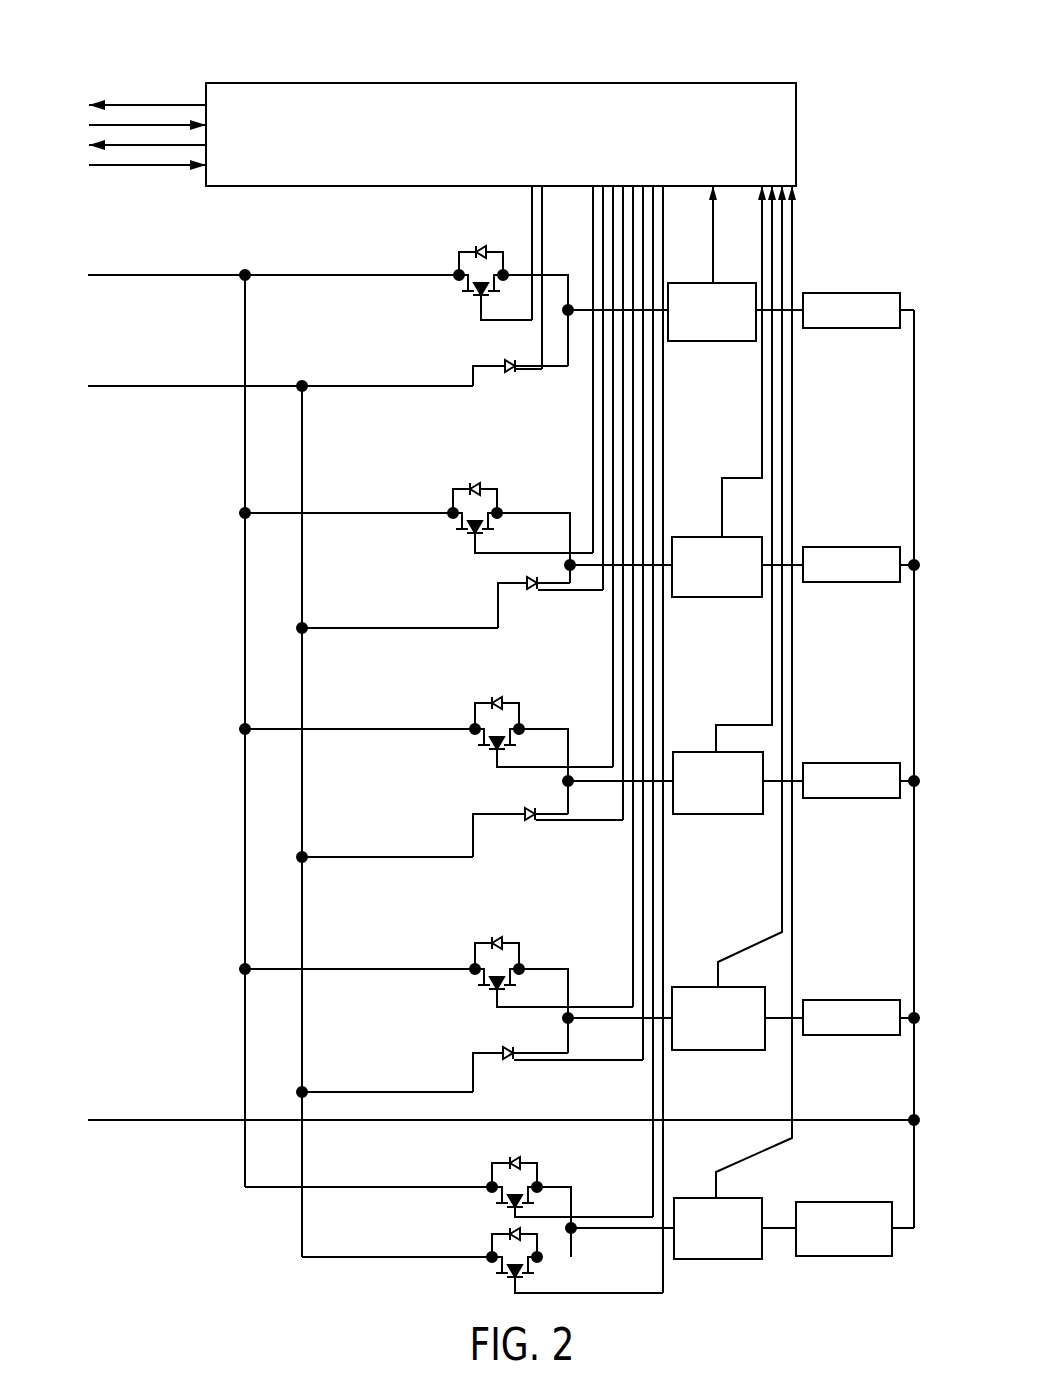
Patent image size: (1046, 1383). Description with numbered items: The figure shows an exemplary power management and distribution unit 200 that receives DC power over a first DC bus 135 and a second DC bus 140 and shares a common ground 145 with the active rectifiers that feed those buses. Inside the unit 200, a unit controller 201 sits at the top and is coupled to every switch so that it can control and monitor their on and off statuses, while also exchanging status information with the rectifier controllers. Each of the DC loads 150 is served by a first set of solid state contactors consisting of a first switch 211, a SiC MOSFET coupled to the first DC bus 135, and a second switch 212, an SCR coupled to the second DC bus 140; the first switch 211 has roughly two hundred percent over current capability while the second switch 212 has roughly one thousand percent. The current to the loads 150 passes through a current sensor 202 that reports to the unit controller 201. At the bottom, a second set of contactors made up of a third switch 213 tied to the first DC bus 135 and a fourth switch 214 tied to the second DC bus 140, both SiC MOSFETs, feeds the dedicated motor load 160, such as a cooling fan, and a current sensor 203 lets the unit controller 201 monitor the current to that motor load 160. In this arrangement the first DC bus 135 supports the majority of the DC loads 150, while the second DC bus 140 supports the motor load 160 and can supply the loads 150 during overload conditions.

The power management and distribution unit 200 is at (116, 64).
The unit controller 201 is at (796, 138).
The first DC bus 135 is at (131, 275).
The second DC bus 140 is at (133, 386).
The common ground 145 is at (121, 1120).
The first switch 211 is at (484, 250).
The second switch 212 is at (510, 372).
The current sensor 202 is at (708, 341).
The DC loads 150 is at (850, 293).
The current sensor 203 is at (701, 1198).
The dedicated motor load 160 is at (841, 1202).
The third switch 213 is at (522, 1162).
The fourth switch 214 is at (530, 1264).